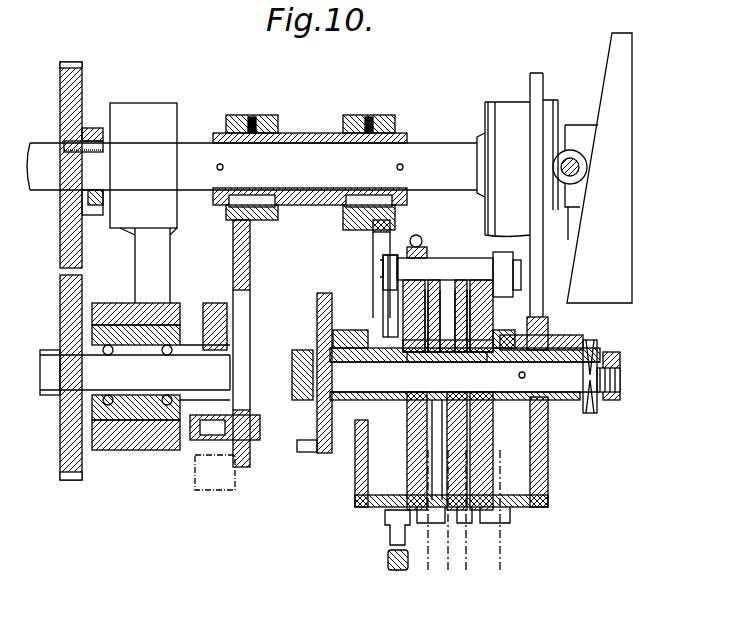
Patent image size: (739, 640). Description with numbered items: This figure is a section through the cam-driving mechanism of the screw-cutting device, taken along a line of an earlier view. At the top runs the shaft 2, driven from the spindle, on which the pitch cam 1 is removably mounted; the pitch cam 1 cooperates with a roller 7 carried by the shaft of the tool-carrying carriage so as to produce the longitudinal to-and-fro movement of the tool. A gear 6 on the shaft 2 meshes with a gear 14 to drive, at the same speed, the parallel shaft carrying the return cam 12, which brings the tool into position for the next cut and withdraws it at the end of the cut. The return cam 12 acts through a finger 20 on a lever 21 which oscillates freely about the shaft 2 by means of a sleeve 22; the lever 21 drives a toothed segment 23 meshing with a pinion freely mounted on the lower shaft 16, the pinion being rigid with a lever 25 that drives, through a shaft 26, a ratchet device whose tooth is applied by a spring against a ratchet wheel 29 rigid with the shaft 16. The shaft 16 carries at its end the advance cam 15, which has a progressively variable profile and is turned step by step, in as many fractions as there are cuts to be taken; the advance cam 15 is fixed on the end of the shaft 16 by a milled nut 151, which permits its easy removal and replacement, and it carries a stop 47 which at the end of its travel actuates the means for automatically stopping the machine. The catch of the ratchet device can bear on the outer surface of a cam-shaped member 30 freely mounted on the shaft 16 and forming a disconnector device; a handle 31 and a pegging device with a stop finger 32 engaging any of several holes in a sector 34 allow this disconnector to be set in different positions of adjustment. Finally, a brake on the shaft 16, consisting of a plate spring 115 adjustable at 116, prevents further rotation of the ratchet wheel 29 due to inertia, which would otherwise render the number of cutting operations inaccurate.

The pitch cam 1 is at (610, 157).
The shaft 2 is at (435, 170).
The gear 6 is at (82, 70).
The roller 7 is at (577, 160).
The return cam 12 is at (210, 305).
The gear 14 is at (70, 290).
The advance cam 15 is at (317, 318).
The milled nut 151 is at (293, 358).
The shaft 16 is at (508, 377).
The finger 20 is at (240, 435).
The lever 21 is at (250, 290).
The sleeve 22 is at (312, 137).
The toothed segment 23 is at (380, 249).
The lever 25 is at (397, 290).
The shaft 26 is at (460, 275).
The ratchet wheel 29 is at (480, 460).
The cam-shaped member 30 is at (490, 474).
The handle 31 is at (390, 520).
The stop finger 32 is at (392, 562).
The sector 34 is at (530, 505).
The stop 47 is at (303, 446).
The plate spring 115 is at (590, 402).
The adjusting means 116 is at (612, 352).